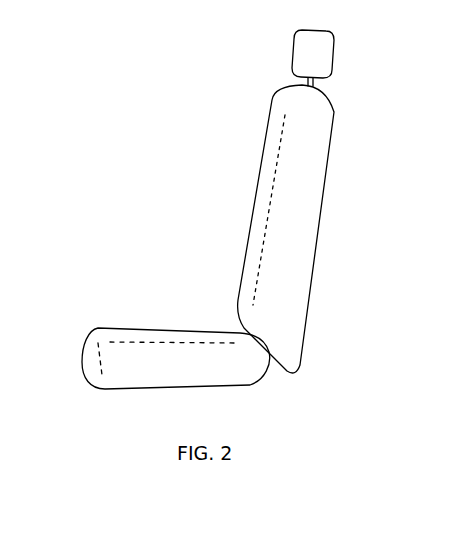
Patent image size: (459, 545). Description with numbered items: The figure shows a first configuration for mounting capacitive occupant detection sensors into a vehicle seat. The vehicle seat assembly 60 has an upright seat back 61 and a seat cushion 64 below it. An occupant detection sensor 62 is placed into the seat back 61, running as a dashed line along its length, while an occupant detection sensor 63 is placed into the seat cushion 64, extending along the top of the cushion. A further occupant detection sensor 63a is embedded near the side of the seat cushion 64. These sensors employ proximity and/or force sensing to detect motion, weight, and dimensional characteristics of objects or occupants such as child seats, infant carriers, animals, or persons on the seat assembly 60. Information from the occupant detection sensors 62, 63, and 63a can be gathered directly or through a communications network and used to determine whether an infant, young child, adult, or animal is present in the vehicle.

The vehicle seat assembly 60 is at (343, 113).
The seat back 61 is at (272, 91).
The occupant detection sensor 62 is at (272, 203).
The occupant detection sensor 63 is at (193, 341).
The occupant detection sensor 63a is at (96, 355).
The seat cushion 64 is at (108, 327).